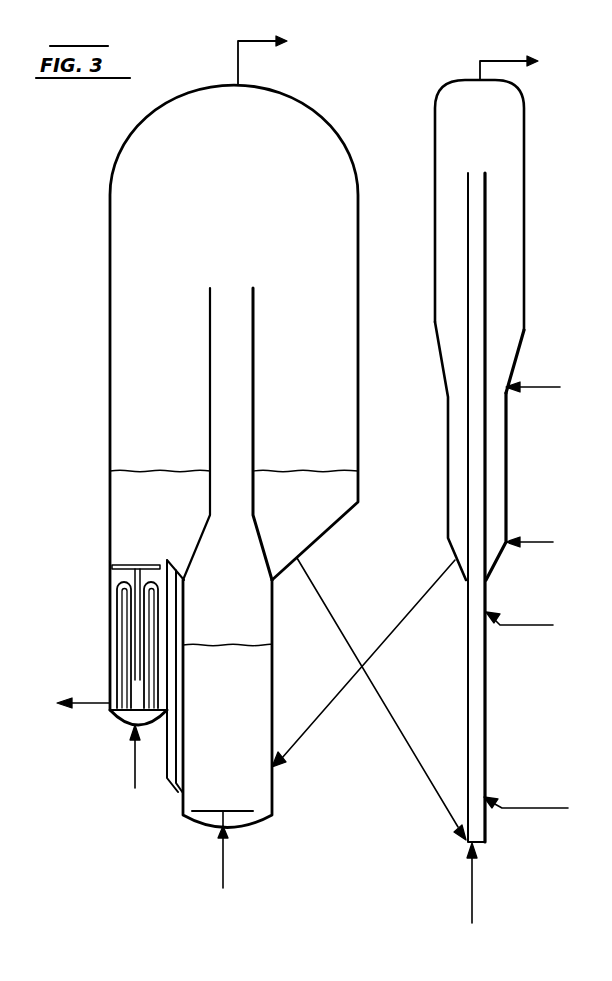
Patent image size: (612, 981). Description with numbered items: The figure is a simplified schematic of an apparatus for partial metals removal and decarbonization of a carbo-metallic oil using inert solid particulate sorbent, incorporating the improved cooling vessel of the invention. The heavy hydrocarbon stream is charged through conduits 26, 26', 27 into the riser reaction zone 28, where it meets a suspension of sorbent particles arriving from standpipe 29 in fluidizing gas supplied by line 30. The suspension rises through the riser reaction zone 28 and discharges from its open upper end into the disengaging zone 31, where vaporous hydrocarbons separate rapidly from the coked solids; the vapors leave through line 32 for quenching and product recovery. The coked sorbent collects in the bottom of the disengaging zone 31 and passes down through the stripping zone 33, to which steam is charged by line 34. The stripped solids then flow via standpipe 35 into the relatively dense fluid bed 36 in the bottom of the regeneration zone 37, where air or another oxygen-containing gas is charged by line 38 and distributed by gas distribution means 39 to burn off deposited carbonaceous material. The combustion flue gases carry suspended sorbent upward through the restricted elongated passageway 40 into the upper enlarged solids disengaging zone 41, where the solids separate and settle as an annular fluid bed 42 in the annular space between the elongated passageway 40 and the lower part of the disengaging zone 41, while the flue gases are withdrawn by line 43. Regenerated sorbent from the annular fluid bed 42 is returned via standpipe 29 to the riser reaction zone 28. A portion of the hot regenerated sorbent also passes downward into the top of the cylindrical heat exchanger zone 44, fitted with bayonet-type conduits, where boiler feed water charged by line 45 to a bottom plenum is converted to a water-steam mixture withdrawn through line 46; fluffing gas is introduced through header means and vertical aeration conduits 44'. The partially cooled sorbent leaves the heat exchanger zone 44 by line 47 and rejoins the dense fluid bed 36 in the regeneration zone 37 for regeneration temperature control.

The conduit 26 is at (523, 638).
The conduit 26' is at (526, 821).
The conduit 27 is at (540, 390).
The riser reaction zone 28 is at (486, 718).
The standpipe 29 is at (436, 800).
The line 30 is at (473, 893).
The disengaging zone 31 is at (520, 153).
The line 32 is at (509, 61).
The stripping zone 33 is at (507, 478).
The line 34 is at (535, 545).
The standpipe 35 is at (415, 605).
The dense fluid bed 36 is at (239, 724).
The regeneration zone 37 is at (273, 675).
The line 38 is at (224, 873).
The gas distribution means 39 is at (241, 811).
The elongated passageway 40 is at (254, 405).
The solids disengaging zone 41 is at (358, 348).
The annular fluid bed 42 is at (166, 529).
The line 43 is at (238, 40).
The heat exchanger zone 44 is at (112, 653).
The vertical aeration conduits 44' is at (112, 616).
The line 45 is at (133, 760).
The line 46 is at (90, 702).
The line 47 is at (169, 778).